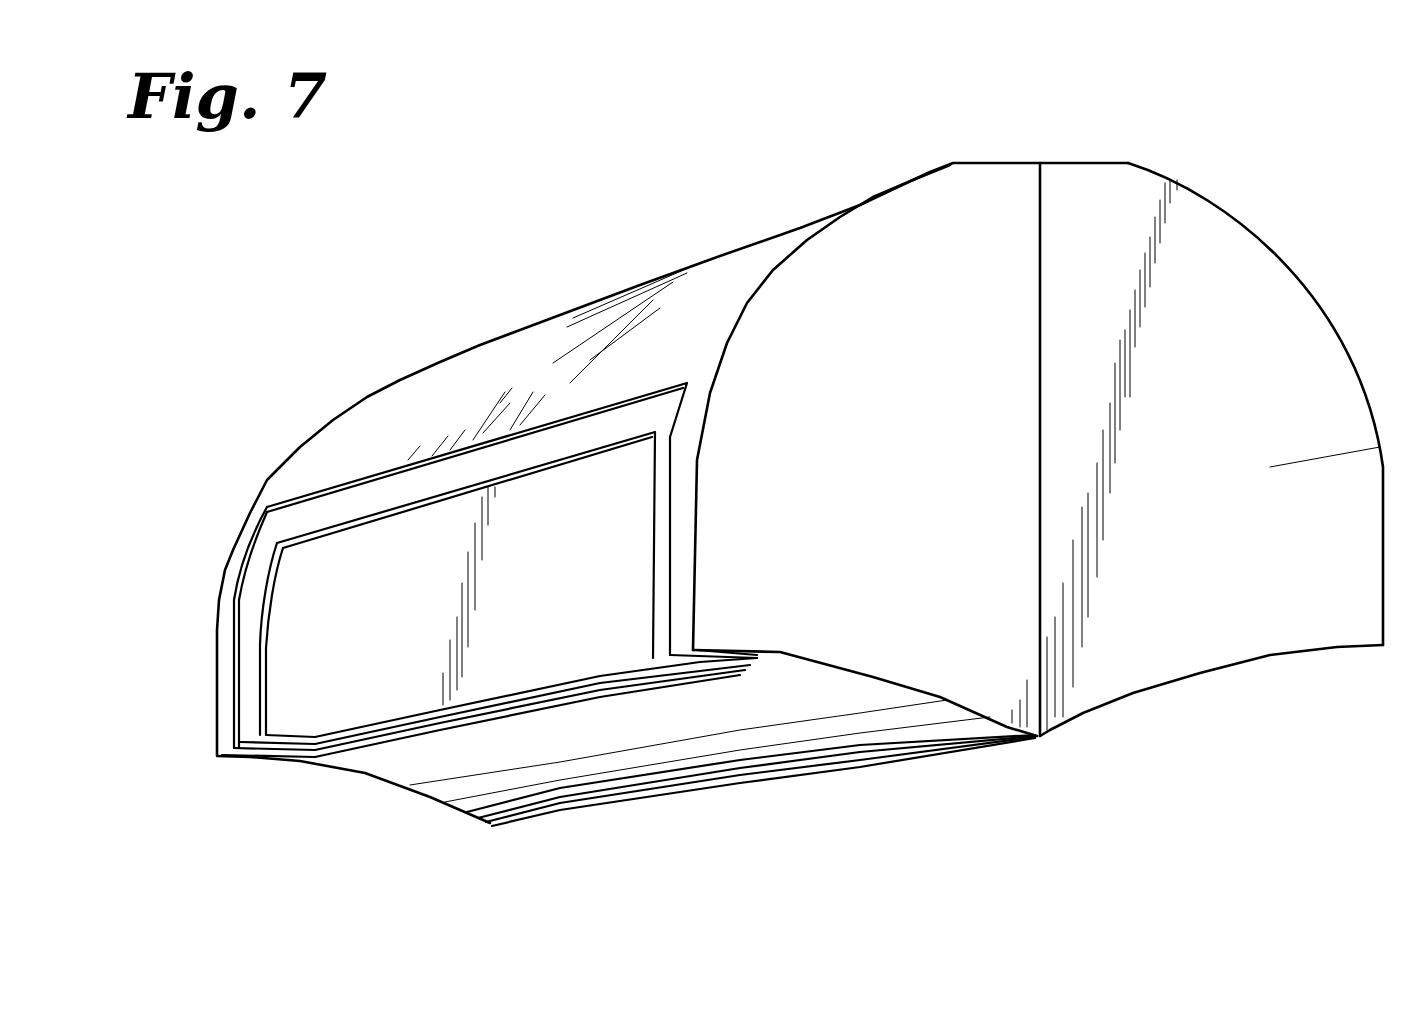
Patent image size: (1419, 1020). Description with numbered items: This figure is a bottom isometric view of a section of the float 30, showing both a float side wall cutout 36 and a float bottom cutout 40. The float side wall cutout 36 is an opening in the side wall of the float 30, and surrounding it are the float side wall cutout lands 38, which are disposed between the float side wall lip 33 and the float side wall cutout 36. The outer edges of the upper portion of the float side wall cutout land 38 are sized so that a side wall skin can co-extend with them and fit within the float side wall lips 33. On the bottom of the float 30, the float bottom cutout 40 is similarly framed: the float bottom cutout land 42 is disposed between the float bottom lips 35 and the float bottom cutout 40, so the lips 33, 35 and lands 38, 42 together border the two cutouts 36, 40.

The float 30 is at (1238, 212).
The float side wall lip 33 is at (657, 392).
The float bottom lip 35 is at (262, 752).
The float side wall cutout 36 is at (387, 578).
The float side wall cutout land 38 is at (565, 440).
The float bottom cutout 40 is at (368, 705).
The float bottom cutout land 42 is at (300, 740).